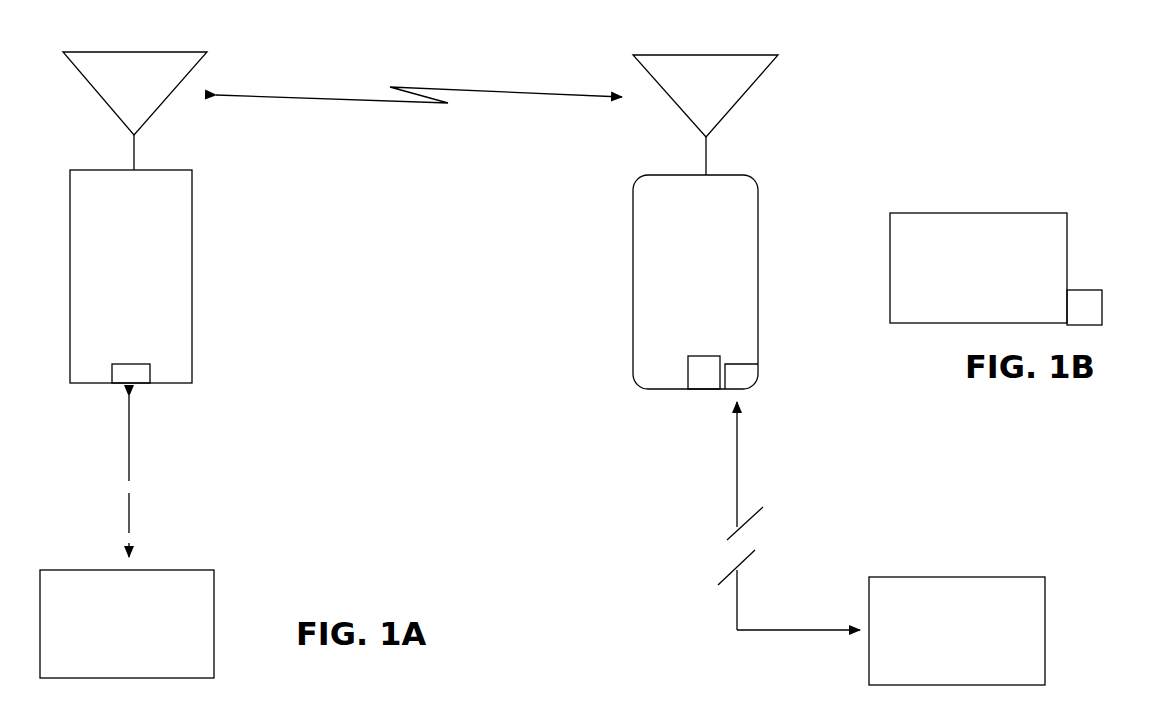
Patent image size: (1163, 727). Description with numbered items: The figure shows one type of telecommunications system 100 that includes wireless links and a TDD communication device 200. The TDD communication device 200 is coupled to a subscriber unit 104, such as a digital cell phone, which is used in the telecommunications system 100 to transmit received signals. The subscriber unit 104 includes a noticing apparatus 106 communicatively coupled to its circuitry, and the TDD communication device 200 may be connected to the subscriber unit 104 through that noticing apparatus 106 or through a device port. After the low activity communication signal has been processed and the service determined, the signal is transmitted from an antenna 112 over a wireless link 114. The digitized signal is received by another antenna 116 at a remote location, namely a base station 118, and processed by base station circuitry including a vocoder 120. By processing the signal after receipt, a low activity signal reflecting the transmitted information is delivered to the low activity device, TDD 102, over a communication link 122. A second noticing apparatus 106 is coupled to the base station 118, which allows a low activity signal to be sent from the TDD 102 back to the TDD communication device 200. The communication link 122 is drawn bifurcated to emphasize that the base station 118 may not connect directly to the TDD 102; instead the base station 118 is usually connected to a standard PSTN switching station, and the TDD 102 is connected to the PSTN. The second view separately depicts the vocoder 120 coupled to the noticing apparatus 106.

In FIG. 1B, the telecommunications system 100 is at (1014, 189).
In FIG. 1A, the TDD 102 is at (983, 577).
In FIG. 1A, the subscriber unit 104 is at (168, 170).
In FIG. 1A, the noticing apparatus 106 is at (139, 362).
In FIG. 1B, the noticing apparatus 106 is at (1077, 286).
In FIG. 1A, the antenna 112 is at (168, 48).
In FIG. 1A, the wireless link 114 is at (296, 93).
In FIG. 1A, the antenna 116 is at (741, 52).
In FIG. 1A, the base station 118 is at (740, 172).
In FIG. 1A, the vocoder 120 is at (716, 332).
In FIG. 1B, the vocoder 120 is at (1015, 212).
In FIG. 1A, the communication link 122 is at (780, 632).
In FIG. 1A, the TDD communication device 200 is at (163, 568).